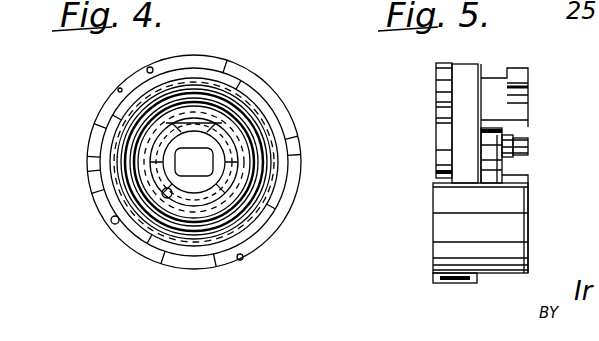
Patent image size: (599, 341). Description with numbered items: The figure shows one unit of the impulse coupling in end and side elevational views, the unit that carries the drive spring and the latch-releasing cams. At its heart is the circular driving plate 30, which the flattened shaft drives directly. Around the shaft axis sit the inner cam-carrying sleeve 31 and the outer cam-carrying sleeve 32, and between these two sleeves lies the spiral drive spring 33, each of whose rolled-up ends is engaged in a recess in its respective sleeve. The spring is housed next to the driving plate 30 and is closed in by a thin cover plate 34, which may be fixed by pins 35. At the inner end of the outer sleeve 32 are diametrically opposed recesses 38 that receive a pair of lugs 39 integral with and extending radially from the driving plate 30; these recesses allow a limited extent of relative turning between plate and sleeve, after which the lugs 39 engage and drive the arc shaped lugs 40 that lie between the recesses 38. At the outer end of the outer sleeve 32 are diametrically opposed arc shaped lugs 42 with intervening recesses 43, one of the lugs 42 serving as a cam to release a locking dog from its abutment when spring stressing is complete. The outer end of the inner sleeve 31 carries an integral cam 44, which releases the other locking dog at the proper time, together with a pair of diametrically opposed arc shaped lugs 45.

In FIG. 4, the driving plate 30 is at (194, 162).
In FIG. 5, the driving plate 30 is at (443, 113).
In FIG. 4, the inner cam-carrying sleeve 31 is at (225, 131).
In FIG. 4, the outer cam-carrying sleeve 32 is at (228, 51).
In FIG. 5, the outer cam-carrying sleeve 32 is at (467, 124).
In FIG. 4, the spiral drive spring 33 is at (100, 156).
In FIG. 4, the cover plate 34 is at (273, 230).
In FIG. 5, the cover plate 34 is at (482, 67).
In FIG. 4, the pins 35 is at (150, 70).
In FIG. 5, the recesses 38 is at (448, 160).
In FIG. 5, the lugs 39 is at (443, 77).
In FIG. 5, the arc shaped lugs 40 is at (448, 230).
In FIG. 4, the arc shaped lugs 42 is at (290, 140).
In FIG. 5, the arc shaped lugs 42 is at (530, 126).
In FIG. 4, the recesses 43 is at (120, 90).
In FIG. 5, the recesses 43 is at (513, 177).
In FIG. 4, the cam 44 is at (167, 193).
In FIG. 5, the cam 44 is at (492, 157).
In FIG. 4, the arc shaped lugs 45 is at (165, 138).
In FIG. 5, the arc shaped lugs 45 is at (508, 153).